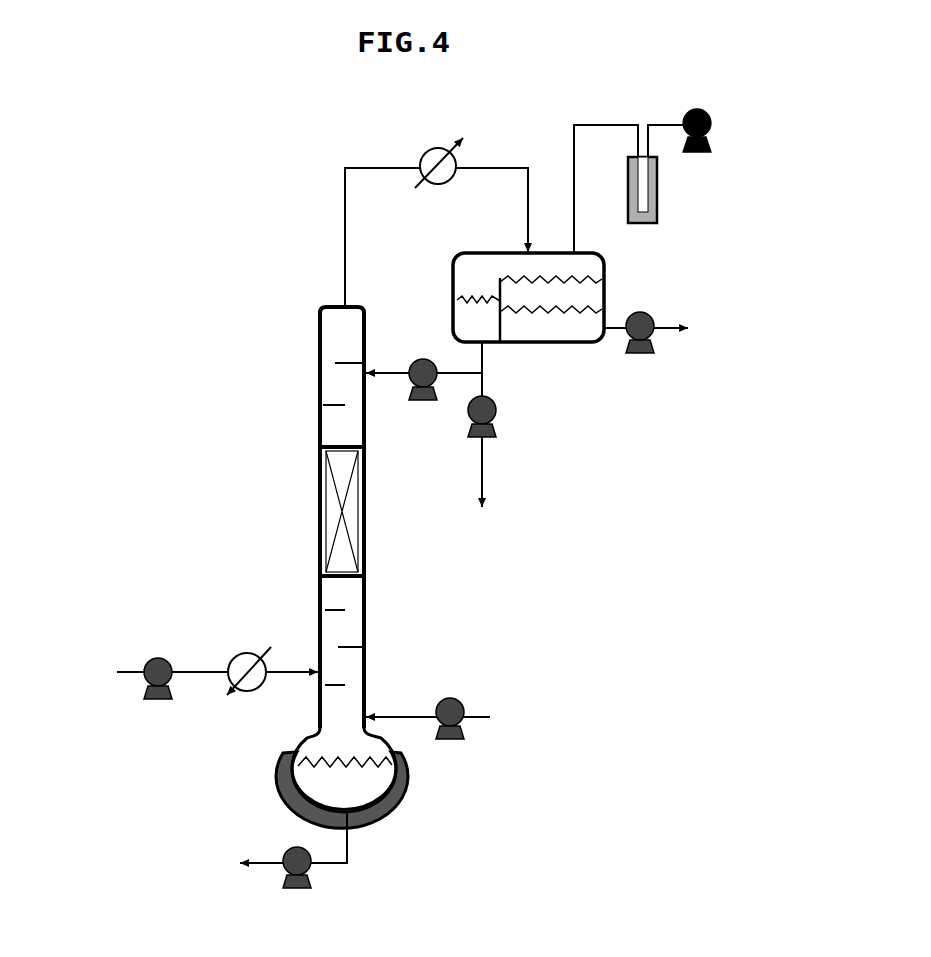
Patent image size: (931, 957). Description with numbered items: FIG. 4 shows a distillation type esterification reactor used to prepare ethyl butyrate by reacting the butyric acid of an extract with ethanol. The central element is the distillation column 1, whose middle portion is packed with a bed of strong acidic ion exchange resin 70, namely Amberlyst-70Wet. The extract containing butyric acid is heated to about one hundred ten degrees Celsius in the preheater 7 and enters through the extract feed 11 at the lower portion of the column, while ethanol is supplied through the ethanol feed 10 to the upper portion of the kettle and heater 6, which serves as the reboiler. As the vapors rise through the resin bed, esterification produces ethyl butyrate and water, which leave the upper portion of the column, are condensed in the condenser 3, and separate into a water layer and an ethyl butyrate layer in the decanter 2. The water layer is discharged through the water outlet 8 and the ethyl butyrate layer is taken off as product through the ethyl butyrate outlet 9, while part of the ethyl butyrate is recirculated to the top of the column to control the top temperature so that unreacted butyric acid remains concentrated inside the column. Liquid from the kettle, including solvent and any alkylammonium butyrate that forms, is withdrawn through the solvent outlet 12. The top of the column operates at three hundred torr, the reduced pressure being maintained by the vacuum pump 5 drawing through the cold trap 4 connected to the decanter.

The reactive distillation column 1 is at (342, 517).
The Amberlyst-70 catalyst bed 70 is at (335, 510).
The decanter 2 is at (499, 281).
The condenser 3 is at (438, 221).
The cold trap 4 is at (673, 189).
The vacuum pump 5 is at (746, 125).
The kettle and heater 6 is at (410, 783).
The preheater 7 is at (231, 688).
The water outlet 8 is at (686, 332).
The ethyl butyrate outlet 9 is at (513, 425).
The ethanol feed 10 is at (478, 715).
The RCOOH in solvent feed 11 is at (173, 653).
The solvent outlet 12 is at (242, 849).